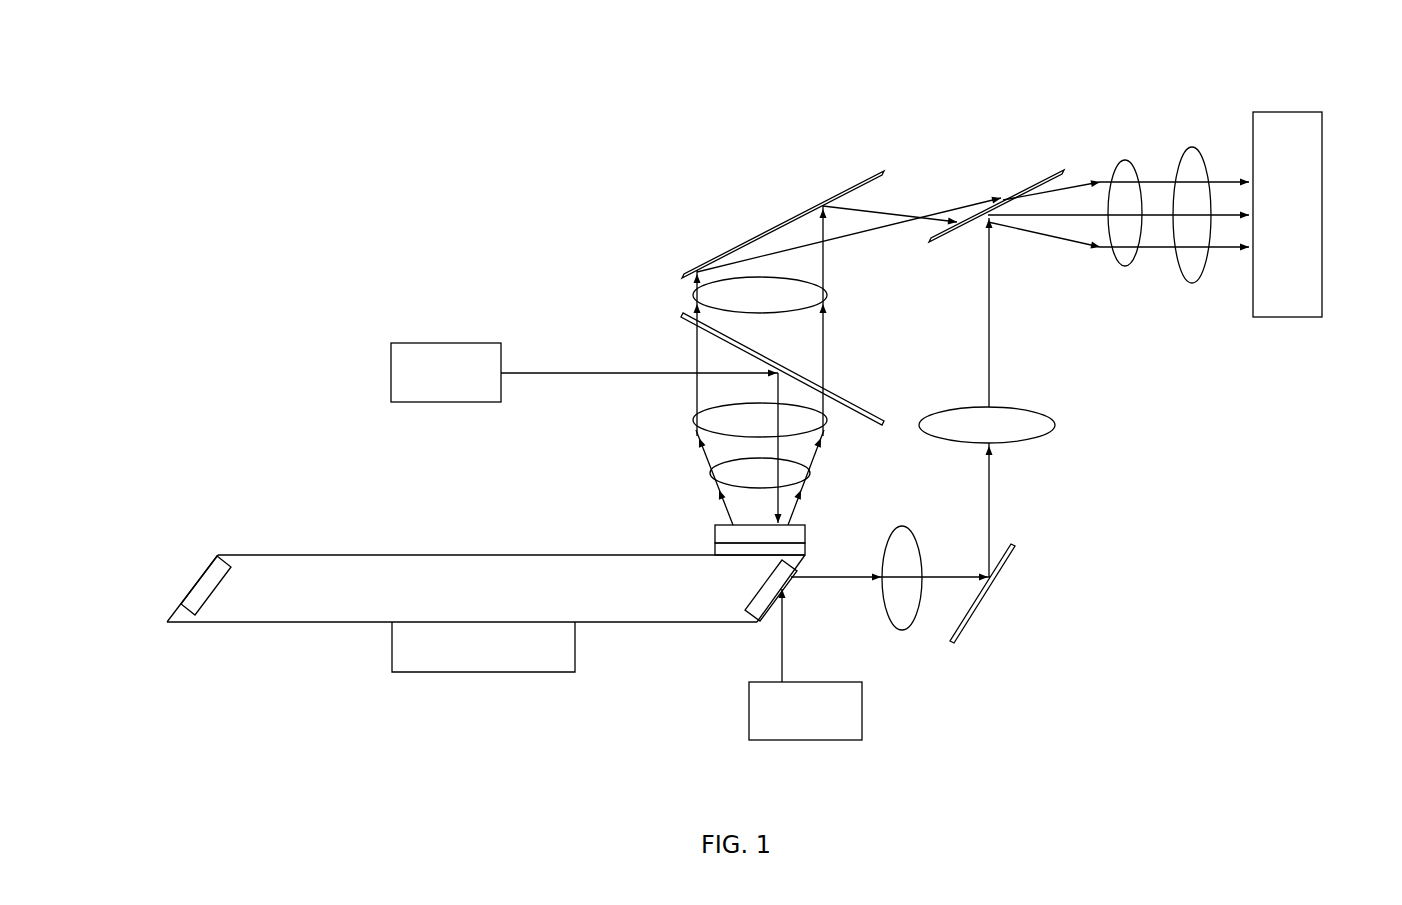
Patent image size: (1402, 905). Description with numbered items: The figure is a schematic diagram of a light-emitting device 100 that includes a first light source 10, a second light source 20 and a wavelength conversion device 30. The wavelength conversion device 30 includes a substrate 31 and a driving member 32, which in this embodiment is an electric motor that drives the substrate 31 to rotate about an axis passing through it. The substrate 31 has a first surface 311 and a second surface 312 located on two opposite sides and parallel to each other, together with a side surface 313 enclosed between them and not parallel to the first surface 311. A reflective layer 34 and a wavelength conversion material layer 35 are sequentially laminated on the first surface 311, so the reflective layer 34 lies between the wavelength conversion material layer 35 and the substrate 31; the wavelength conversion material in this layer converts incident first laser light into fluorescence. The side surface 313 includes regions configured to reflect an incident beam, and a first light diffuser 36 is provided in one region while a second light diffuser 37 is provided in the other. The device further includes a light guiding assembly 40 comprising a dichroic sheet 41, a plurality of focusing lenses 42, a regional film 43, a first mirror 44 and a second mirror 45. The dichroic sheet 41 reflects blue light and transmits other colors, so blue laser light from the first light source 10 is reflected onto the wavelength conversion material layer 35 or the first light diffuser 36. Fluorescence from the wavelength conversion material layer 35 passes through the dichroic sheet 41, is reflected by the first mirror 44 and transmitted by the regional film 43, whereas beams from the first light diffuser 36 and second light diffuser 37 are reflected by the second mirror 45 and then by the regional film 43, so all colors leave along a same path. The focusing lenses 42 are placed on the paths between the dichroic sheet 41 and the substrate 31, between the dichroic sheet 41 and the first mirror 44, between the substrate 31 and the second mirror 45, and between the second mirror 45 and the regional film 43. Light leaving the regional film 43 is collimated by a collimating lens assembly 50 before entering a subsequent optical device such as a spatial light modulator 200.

The light-emitting device 100 is at (643, 66).
The first light source 10 is at (446, 343).
The second light source 20 is at (861, 707).
The spatial light modulator 200 is at (1287, 113).
The wavelength conversion device 30 is at (266, 754).
The substrate 31 is at (486, 659).
The first surface 311 is at (265, 555).
The second surface 312 is at (327, 623).
The side surface 313 is at (208, 639).
The driving member 32 is at (423, 662).
The reflective layer 34 is at (808, 546).
The wavelength conversion material layer 35 is at (722, 527).
The first light diffuser 36 is at (212, 568).
The second light diffuser 37 is at (789, 579).
The light guiding assembly 40 is at (716, 176).
The dichroic sheet 41 is at (737, 343).
The focusing lenses 42 is at (829, 300).
The regional film 43 is at (1037, 181).
The first mirror 44 is at (788, 217).
The second mirror 45 is at (1010, 565).
The collimating lens assembly 50 is at (1190, 150).